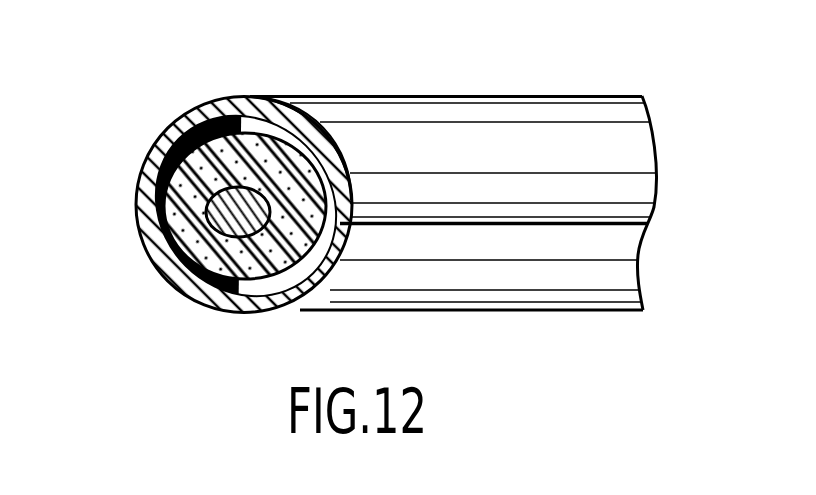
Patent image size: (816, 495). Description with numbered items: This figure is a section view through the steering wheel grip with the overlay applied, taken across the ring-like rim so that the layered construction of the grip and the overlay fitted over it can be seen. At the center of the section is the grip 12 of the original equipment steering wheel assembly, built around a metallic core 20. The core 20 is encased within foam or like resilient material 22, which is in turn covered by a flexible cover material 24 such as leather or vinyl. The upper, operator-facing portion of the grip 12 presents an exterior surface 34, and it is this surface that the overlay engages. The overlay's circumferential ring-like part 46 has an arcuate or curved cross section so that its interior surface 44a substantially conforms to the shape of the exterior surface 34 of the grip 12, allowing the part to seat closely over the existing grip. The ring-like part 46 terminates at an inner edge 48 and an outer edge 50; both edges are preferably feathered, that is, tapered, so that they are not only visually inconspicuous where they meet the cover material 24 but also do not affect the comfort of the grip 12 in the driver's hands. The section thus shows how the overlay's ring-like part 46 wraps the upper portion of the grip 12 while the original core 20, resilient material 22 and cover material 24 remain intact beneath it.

The grip 12 is at (256, 92).
The core 20 is at (238, 204).
The resilient material 22 is at (160, 224).
The cover material 24 is at (163, 268).
The exterior surface 34 is at (160, 126).
The interior surface 44a is at (140, 160).
The ring-like part 46 is at (528, 97).
The inner edge 48 is at (366, 226).
The outer edge 50 is at (146, 205).